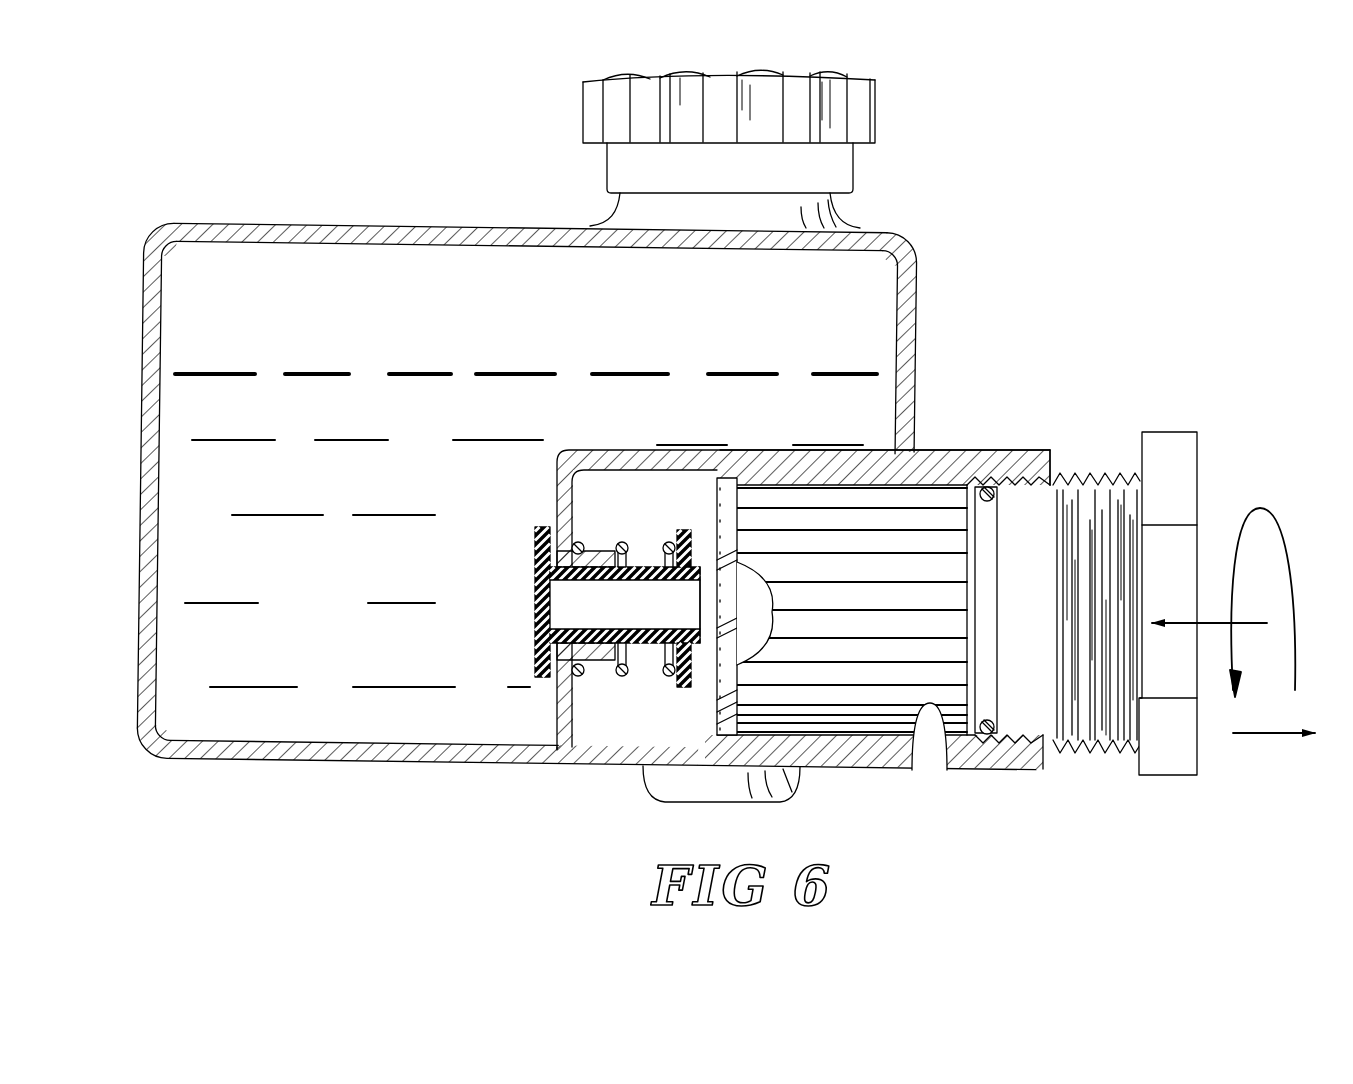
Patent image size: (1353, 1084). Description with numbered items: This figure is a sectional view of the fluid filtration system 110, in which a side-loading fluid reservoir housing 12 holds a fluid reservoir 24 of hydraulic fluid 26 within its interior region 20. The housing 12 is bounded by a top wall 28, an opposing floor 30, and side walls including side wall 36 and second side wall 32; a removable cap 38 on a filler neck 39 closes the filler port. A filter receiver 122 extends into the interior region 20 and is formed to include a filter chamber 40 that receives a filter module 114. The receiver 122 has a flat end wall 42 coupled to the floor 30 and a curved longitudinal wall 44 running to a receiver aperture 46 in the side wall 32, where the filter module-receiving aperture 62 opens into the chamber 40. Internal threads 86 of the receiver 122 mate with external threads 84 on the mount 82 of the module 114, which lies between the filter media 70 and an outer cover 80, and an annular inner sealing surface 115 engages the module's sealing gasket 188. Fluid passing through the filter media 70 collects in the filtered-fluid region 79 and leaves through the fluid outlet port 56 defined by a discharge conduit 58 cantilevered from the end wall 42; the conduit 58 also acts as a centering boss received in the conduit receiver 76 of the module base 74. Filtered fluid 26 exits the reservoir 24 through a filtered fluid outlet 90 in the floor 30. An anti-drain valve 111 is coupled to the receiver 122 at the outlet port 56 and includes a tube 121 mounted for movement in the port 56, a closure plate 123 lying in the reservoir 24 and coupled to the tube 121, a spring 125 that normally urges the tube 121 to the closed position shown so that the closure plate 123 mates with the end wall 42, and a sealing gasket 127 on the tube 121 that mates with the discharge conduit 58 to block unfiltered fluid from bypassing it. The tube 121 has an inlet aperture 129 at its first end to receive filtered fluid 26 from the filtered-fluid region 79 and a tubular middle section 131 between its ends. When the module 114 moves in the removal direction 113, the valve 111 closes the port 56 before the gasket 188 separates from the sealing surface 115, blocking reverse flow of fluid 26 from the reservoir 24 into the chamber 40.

The fluid reservoir housing 12 is at (243, 218).
The interior region 20 is at (437, 280).
The fluid reservoir 24 is at (185, 578).
The fluid 26 is at (452, 405).
The top wall 28 is at (362, 222).
The floor 30 is at (345, 768).
The second side wall 32 is at (917, 395).
The side wall 36 is at (141, 432).
The removable cap 38 is at (895, 122).
The filler neck 39 is at (855, 212).
The filter chamber 40 is at (602, 738).
The end wall 42 is at (557, 513).
The longitudinal wall 44 is at (732, 458).
The receiver aperture 46 is at (905, 455).
The fluid outlet port 56 is at (602, 582).
The discharge conduit 58 is at (603, 565).
The filter module-receiving aperture 62 is at (1060, 470).
The filter media 70 is at (832, 722).
The base 74 is at (722, 500).
The conduit receiver 76 is at (725, 583).
The filtered-fluid region 79 is at (748, 613).
The outer cover 80 is at (1175, 752).
The mount 82 is at (1106, 762).
The external threads 84 is at (1022, 497).
The internal threads 86 is at (1100, 470).
The filtered fluid outlet 90 is at (755, 800).
The fluid filtration system 110 is at (1040, 258).
The anti-drain valve 111 is at (522, 642).
The removal direction 113 is at (1275, 736).
The filter module 114 is at (1153, 395).
The annular inner sealing surface 115 is at (947, 770).
The tube 121 is at (640, 558).
The filter receiver 122 is at (628, 446).
The closure plate 123 is at (545, 613).
The spring 125 is at (570, 742).
The sealing gasket 127 is at (645, 737).
The inlet aperture 129 is at (697, 630).
The tubular middle section 131 is at (648, 650).
The sealing gasket 188 is at (987, 717).